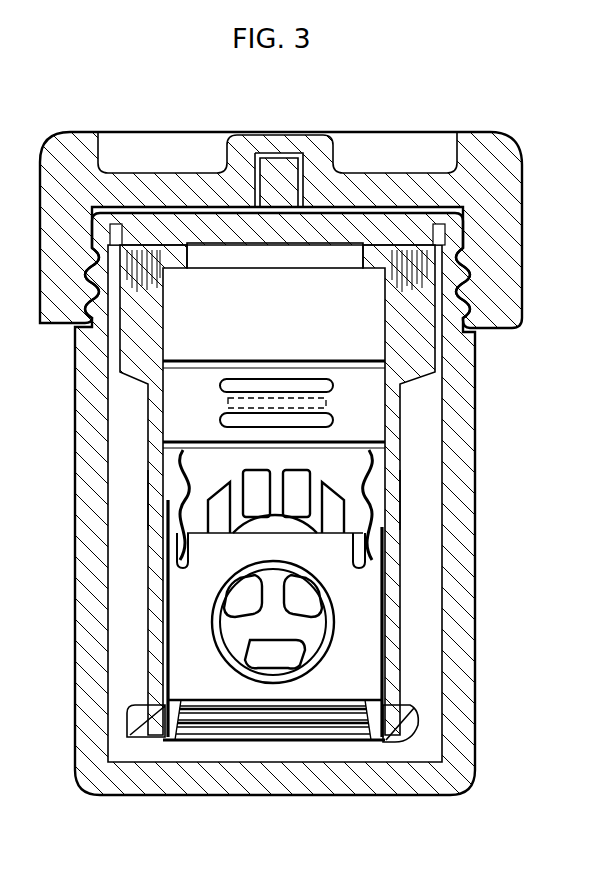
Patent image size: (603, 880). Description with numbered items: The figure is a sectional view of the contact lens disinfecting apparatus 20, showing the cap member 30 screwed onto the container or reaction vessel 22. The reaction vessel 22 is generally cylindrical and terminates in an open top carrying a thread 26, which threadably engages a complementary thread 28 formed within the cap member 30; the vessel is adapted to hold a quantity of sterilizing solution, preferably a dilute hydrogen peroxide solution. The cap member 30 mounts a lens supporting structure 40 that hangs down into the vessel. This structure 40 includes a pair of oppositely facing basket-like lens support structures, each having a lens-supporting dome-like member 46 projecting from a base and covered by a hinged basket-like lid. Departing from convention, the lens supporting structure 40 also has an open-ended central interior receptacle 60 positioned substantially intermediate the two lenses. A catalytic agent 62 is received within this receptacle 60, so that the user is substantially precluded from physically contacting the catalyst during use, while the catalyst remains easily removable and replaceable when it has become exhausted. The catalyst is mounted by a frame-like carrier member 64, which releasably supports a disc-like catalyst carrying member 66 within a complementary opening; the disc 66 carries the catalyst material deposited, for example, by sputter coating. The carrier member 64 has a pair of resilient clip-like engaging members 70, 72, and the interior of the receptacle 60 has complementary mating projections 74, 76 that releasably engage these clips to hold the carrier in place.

The apparatus 20 is at (126, 803).
The container or reaction vessel 22 is at (488, 672).
The thread 26 is at (502, 238).
The complementary thread 28 is at (461, 330).
The cap member 30 is at (483, 142).
The lens supporting structure 40 is at (121, 726).
The lens-supporting dome-like member 46 is at (274, 528).
The central interior receptacle or chamber 60 is at (382, 743).
The catalytic agent or catalyst member 62 is at (259, 750).
The carrier member 64 is at (188, 610).
The disc-like catalyst carrying member 66 is at (309, 643).
The resilient clip-like engaging member 70 is at (188, 492).
The resilient clip-like engaging member 72 is at (353, 492).
The mating projection 74 is at (150, 490).
The mating projection 76 is at (399, 500).